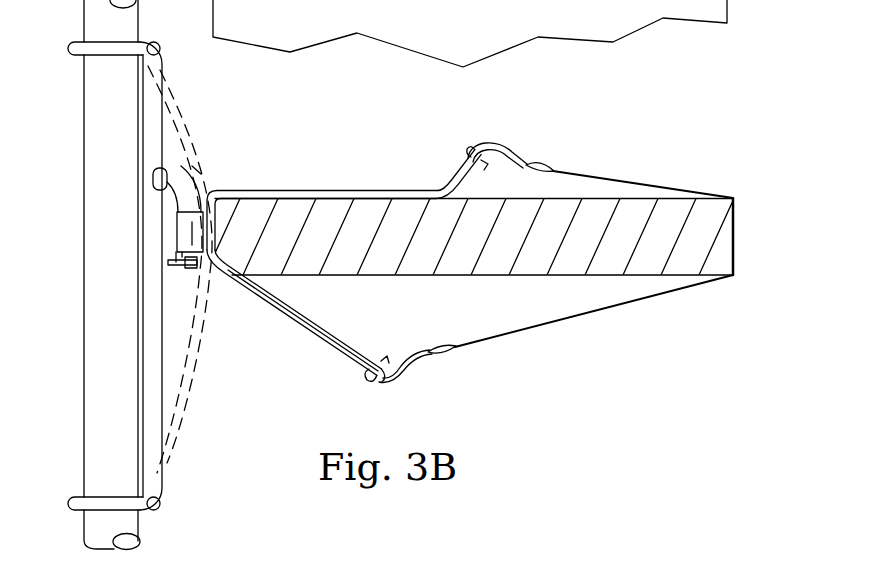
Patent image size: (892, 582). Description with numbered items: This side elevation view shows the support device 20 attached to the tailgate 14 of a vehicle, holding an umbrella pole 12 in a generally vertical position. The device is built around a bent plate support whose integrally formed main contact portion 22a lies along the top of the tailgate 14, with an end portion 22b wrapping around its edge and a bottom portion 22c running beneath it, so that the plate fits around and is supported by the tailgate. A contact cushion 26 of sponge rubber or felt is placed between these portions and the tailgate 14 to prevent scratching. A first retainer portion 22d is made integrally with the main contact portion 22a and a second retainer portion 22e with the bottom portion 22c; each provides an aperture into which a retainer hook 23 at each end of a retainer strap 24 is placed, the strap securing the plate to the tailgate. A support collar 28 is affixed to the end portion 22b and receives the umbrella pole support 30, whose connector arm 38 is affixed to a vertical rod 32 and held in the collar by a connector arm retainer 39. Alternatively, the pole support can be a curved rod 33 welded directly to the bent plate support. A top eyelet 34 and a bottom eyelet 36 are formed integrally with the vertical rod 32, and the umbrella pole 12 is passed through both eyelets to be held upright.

The umbrella pole 12 is at (107, 150).
The tailgate 14 is at (440, 257).
The support device 20 is at (260, 338).
The main contact portion 22a is at (347, 191).
The end portion 22b is at (190, 230).
The bottom portion 22c is at (297, 322).
The first retainer portion 22d is at (458, 167).
The second retainer portion 22e is at (360, 366).
The retainer hook 23 is at (528, 165).
The retainer strap 24 is at (635, 182).
The contact cushion 26 is at (281, 305).
The support collar 28 is at (180, 242).
The umbrella pole support 30 is at (172, 463).
The vertical rod 32 is at (153, 113).
The curved rod 33 is at (195, 171).
The top eyelet 34 is at (78, 54).
The bottom eyelet 36 is at (80, 498).
The connector arm 38 is at (173, 178).
The connector arm retainer 39 is at (175, 263).